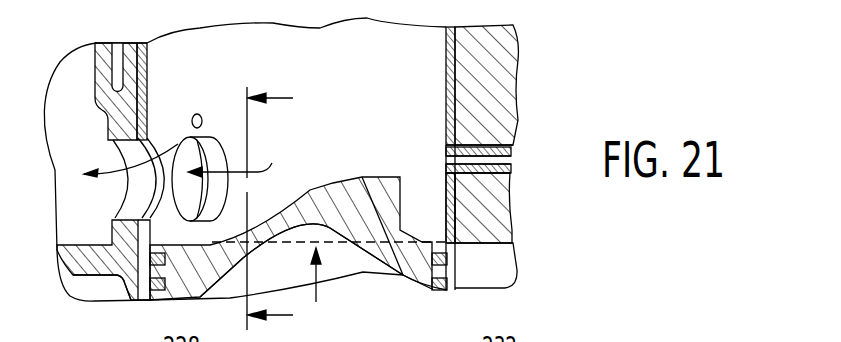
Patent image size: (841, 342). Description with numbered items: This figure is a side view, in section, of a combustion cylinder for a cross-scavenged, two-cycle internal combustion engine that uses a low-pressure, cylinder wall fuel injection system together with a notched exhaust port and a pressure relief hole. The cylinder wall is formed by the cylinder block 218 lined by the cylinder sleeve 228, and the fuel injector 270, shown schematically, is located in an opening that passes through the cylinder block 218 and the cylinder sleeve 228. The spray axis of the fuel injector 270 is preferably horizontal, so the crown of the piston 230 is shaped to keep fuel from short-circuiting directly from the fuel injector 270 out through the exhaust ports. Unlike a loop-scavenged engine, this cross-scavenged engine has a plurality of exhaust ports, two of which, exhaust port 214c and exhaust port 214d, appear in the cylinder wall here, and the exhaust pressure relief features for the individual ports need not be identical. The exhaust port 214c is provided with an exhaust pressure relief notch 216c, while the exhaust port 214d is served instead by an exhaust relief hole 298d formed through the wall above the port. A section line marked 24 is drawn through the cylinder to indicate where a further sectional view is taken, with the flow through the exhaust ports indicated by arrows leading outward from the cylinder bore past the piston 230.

The cylinder block 218 is at (103, 48).
The cylinder sleeve 228 is at (138, 42).
The exhaust pressure relief notch 216c is at (174, 106).
The exhaust port 214c is at (122, 146).
The exhaust port 214d is at (207, 167).
The exhaust relief hole 298d is at (200, 113).
The section line 24 is at (254, 209).
The piston 230 is at (310, 189).
The fuel injector 270 is at (508, 158).